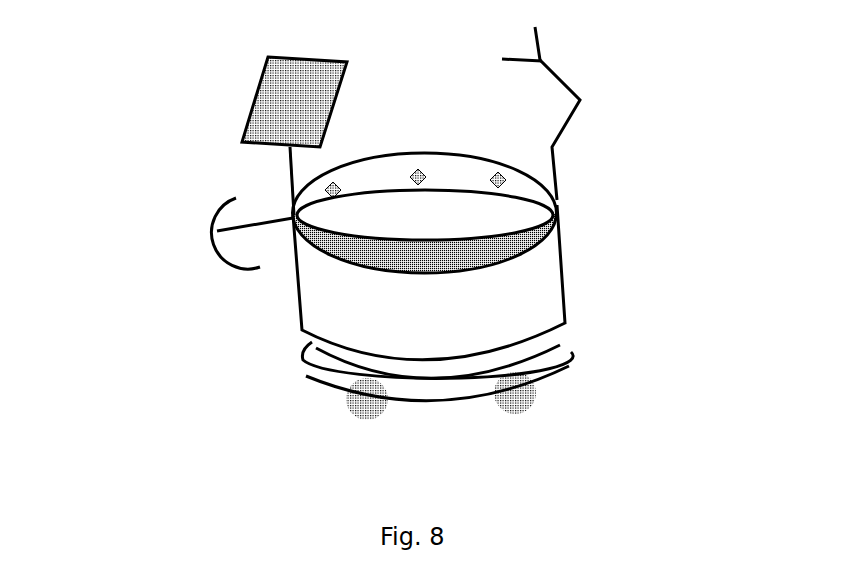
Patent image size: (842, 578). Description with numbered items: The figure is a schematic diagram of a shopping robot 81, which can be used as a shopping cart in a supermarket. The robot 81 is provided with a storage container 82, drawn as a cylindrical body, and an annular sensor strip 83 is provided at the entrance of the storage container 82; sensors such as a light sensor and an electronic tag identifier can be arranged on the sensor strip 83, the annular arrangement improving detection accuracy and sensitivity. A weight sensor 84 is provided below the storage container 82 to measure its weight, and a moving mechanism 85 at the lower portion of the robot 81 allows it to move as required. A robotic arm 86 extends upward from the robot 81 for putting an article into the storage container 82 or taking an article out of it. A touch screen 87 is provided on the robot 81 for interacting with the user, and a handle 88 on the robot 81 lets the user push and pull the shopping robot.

The shopping robot 81 is at (537, 302).
The storage container 82 is at (438, 225).
The annular sensor strip 83 is at (382, 197).
The weight sensor 84 is at (527, 370).
The moving mechanism 85 is at (323, 387).
The robotic arm 86 is at (570, 106).
The touch screen 87 is at (260, 85).
The handle 88 is at (212, 260).